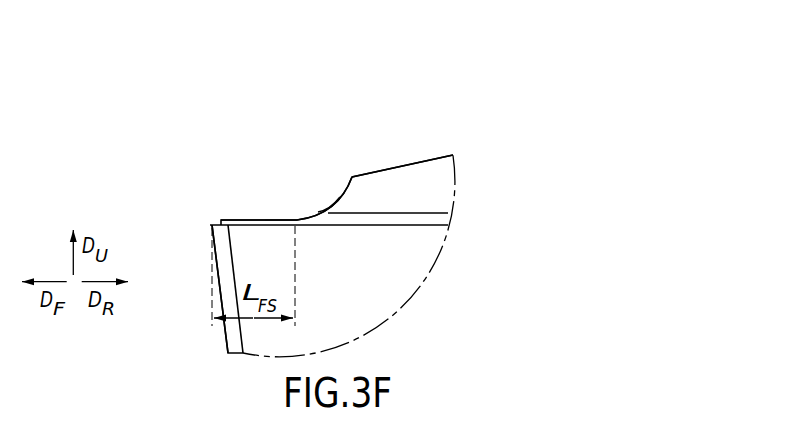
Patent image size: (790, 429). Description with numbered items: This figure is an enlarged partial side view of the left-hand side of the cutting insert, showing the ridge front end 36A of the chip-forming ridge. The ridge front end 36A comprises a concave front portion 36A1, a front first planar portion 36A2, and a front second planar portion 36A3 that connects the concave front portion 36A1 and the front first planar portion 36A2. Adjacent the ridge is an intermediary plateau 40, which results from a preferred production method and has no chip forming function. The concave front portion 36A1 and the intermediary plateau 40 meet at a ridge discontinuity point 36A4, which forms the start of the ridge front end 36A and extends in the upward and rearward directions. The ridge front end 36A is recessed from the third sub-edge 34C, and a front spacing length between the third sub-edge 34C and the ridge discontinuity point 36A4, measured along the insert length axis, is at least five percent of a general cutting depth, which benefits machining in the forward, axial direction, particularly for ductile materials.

The third sub-edge 34C is at (212, 223).
The intermediary plateau 40 is at (262, 218).
The ridge discontinuity point 36A4 is at (293, 218).
The front first planar portion 36A2 is at (344, 177).
The concave front portion 36A1 is at (328, 205).
The front second planar portion 36A3 is at (421, 159).
The ridge front end 36A is at (392, 153).